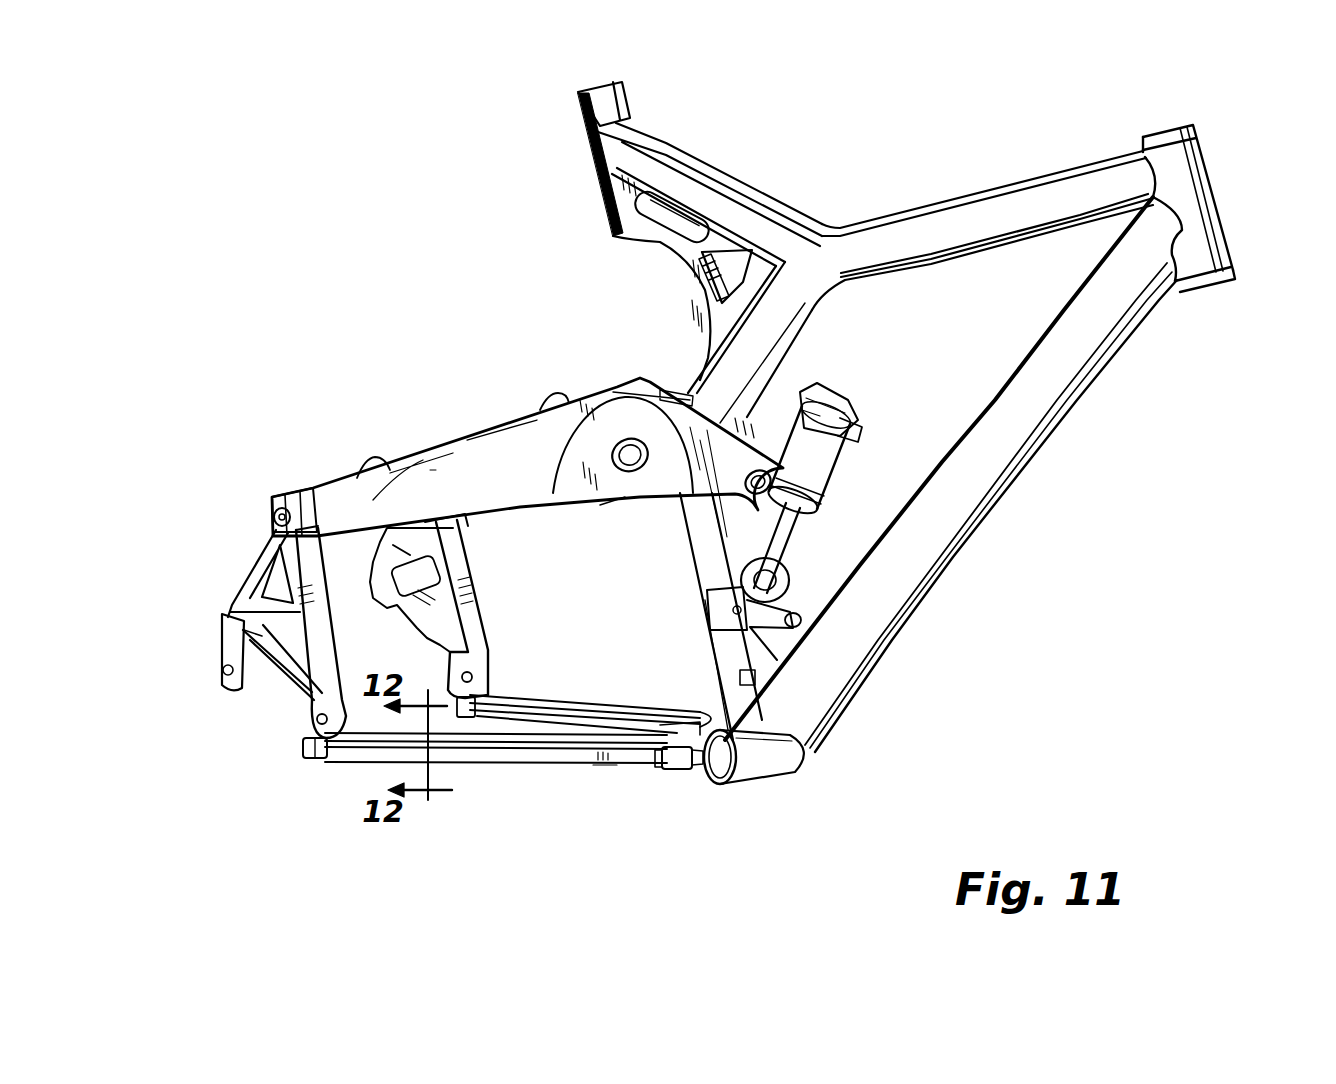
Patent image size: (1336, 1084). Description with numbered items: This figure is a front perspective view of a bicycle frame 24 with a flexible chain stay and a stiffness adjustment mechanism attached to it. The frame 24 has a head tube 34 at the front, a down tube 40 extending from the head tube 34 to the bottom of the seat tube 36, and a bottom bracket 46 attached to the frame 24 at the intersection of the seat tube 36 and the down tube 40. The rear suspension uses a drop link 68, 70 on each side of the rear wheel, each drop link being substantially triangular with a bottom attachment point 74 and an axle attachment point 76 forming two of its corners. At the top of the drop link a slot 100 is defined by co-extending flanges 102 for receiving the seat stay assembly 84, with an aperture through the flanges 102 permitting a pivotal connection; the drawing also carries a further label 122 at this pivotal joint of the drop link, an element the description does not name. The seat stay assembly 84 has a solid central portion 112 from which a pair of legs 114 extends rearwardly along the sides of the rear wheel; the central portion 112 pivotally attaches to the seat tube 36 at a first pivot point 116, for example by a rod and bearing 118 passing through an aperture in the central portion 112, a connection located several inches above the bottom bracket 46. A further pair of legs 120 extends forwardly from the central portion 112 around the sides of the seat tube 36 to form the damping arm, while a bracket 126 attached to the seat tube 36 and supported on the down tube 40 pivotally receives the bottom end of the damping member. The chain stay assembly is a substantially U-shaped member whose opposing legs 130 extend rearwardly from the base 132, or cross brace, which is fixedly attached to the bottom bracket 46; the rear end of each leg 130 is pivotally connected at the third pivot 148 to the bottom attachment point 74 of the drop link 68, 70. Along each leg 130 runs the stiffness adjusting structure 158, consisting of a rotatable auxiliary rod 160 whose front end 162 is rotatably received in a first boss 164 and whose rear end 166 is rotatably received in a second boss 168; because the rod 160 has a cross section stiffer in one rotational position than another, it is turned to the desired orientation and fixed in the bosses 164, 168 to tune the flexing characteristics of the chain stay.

The bicycle frame 24 is at (975, 205).
The head tube 34 is at (1208, 158).
The seat tube 36 is at (590, 120).
The down tube 40 is at (1090, 380).
The bottom bracket 46 is at (815, 755).
The drop link 68 is at (253, 567).
The drop link 70 is at (467, 567).
The bottom attachment point 74 is at (310, 708).
The axle attachment point 76 is at (233, 647).
The seat stay assembly 84 is at (507, 428).
The slot 100 is at (333, 500).
The co-extending flanges 102 is at (280, 517).
The solid central portion 112 is at (653, 382).
The legs 114 is at (425, 465).
The first pivot point 116 is at (613, 497).
The rod and bearing 118 is at (627, 440).
The legs 120 is at (796, 392).
The pivot clevis 122 is at (307, 493).
The bracket 126 is at (777, 663).
The legs 130 is at (503, 722).
The base 132 is at (677, 715).
The third pivot 148 is at (307, 728).
The stiffness adjusting structure 158 is at (606, 765).
The auxiliary rod 160 is at (530, 703).
The front end 162 is at (653, 767).
The first boss 164 is at (683, 770).
The rear end 166 is at (323, 767).
The second boss 168 is at (320, 760).